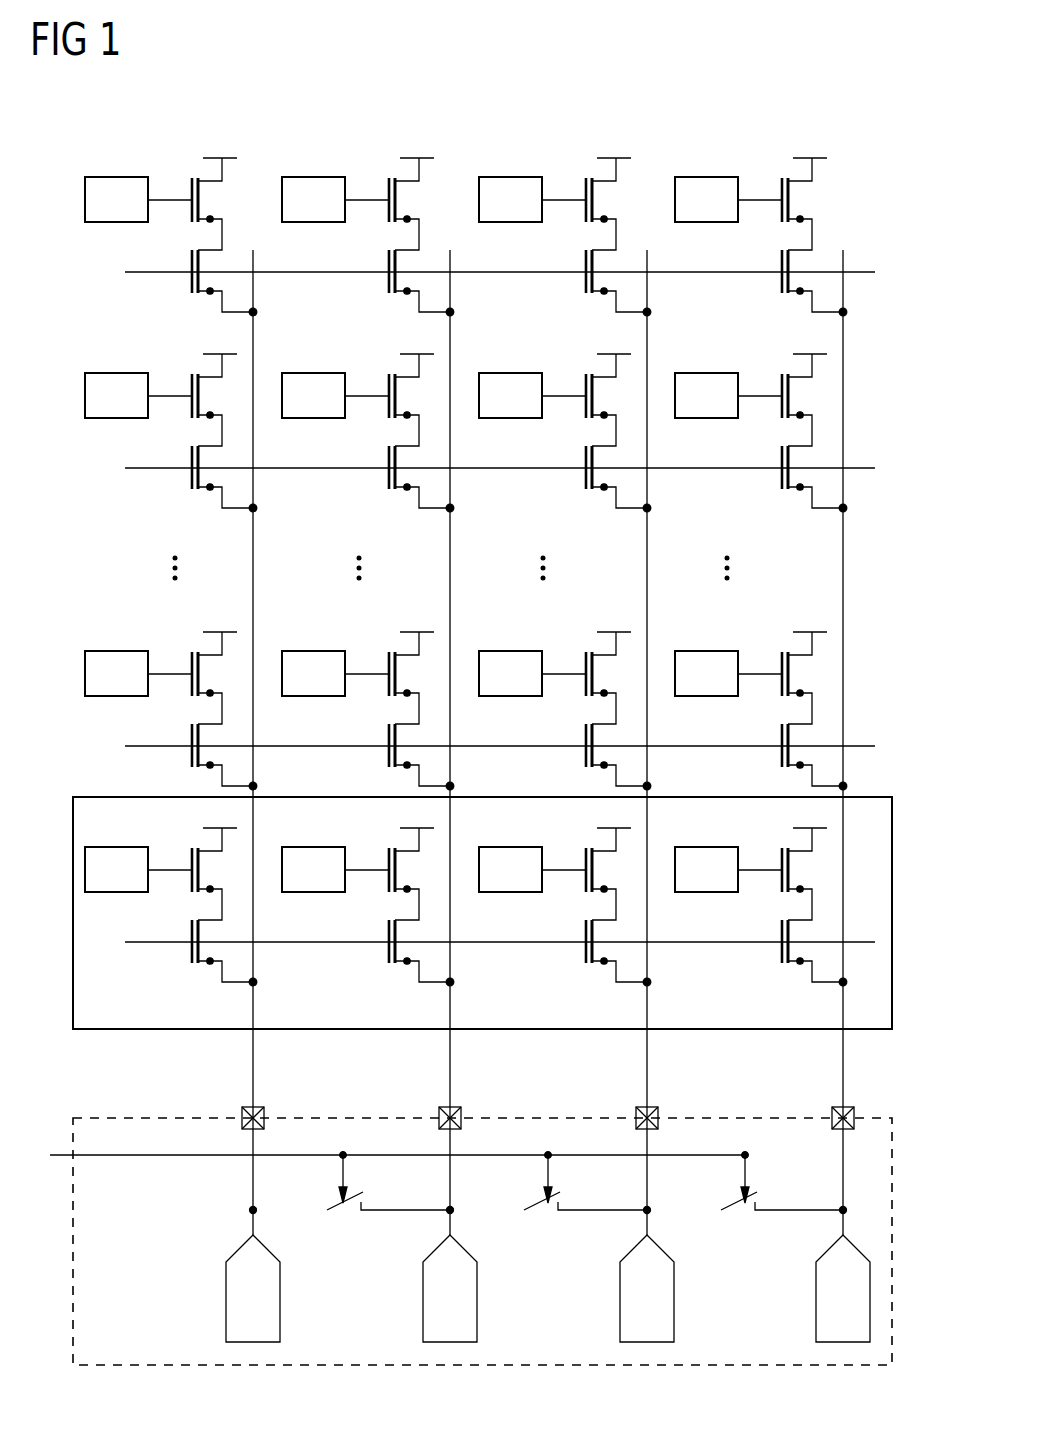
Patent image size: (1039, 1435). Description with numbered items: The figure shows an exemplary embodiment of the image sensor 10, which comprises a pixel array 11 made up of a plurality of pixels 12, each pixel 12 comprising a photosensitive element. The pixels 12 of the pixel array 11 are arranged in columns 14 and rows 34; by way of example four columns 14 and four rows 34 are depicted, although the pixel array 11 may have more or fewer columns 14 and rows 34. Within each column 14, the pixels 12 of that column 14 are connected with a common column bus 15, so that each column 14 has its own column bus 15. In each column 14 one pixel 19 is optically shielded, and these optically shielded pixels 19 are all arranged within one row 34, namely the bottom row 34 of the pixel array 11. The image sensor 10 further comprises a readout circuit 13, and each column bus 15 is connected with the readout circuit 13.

The image sensor 10 is at (835, 132).
The pixel array 11 is at (912, 160).
The pixel 12 is at (117, 224).
The readout circuit 13 is at (911, 1118).
The column 14 is at (115, 166).
The column bus 15 is at (452, 320).
The optically shielded pixel 19 is at (117, 846).
The row 34 is at (72, 200).